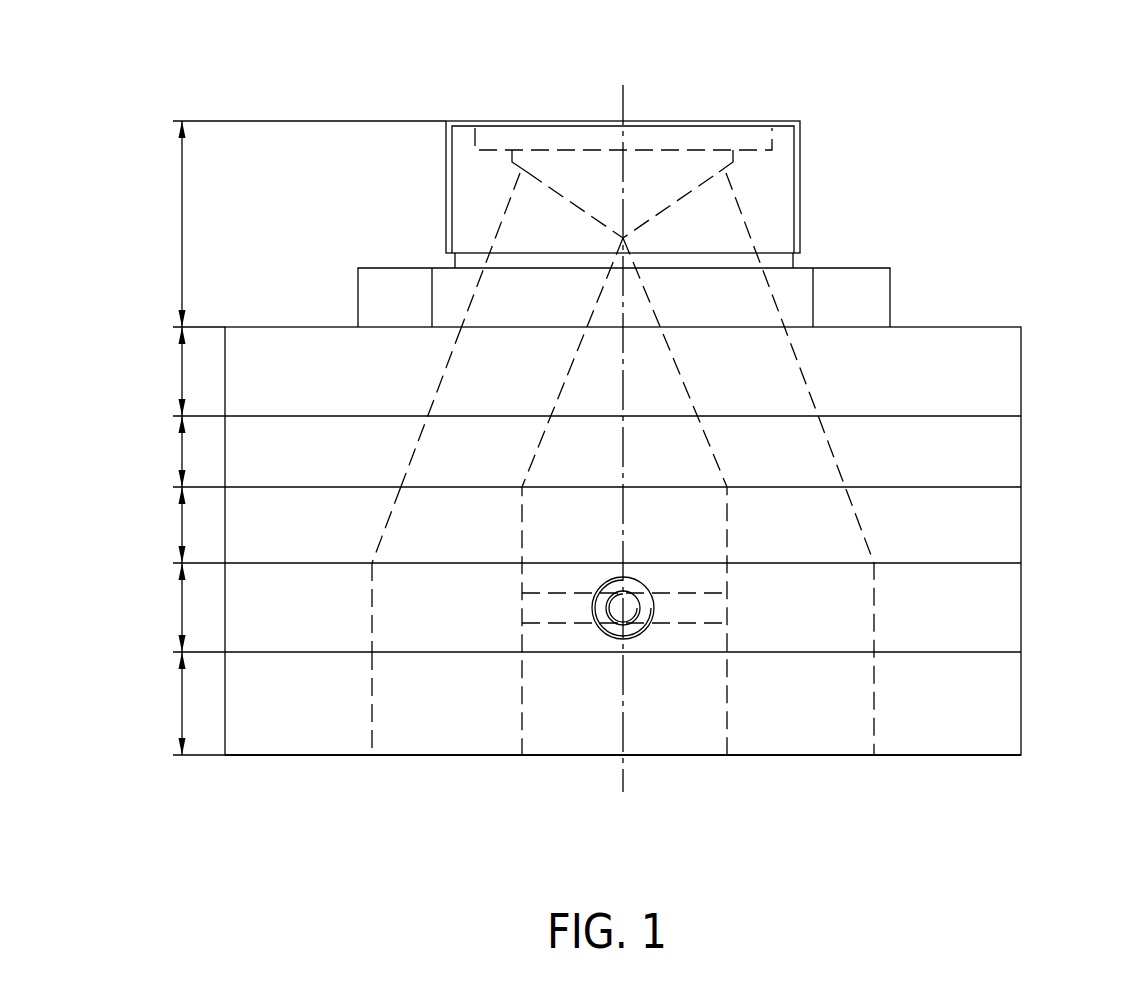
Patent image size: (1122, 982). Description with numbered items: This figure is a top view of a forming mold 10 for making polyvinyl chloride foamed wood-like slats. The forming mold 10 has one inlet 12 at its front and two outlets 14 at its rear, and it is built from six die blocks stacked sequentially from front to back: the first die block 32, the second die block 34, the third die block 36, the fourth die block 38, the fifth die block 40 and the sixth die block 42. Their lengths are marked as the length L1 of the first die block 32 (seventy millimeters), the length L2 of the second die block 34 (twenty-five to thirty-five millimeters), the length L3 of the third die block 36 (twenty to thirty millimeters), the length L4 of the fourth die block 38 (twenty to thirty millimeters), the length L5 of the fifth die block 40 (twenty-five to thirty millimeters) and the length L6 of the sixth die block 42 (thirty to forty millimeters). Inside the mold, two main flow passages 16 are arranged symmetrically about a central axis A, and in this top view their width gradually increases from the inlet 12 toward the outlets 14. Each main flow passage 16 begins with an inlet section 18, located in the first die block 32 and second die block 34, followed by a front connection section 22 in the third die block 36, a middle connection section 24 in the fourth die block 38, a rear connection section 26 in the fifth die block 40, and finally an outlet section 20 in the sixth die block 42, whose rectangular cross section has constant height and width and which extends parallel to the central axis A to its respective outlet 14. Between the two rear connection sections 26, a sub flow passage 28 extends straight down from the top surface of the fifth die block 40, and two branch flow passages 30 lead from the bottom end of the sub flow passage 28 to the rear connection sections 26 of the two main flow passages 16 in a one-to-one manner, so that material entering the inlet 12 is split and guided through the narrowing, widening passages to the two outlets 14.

The forming mold 10 is at (1022, 132).
The inlet 12 is at (703, 182).
The outlets 14 is at (450, 757).
The main flow passages 16 is at (808, 362).
The inlet section 18 is at (500, 223).
The outlet section 20 is at (372, 717).
The front connection section 22 is at (428, 387).
The middle connection section 24 is at (383, 519).
The rear connection section 26 is at (372, 620).
The sub flow passage 28 is at (630, 615).
The branch flow passages 30 is at (558, 623).
The first die block 32 is at (776, 214).
The second die block 34 is at (982, 352).
The third die block 36 is at (1008, 445).
The fourth die block 38 is at (1007, 548).
The fifth die block 40 is at (1007, 637).
The sixth die block 42 is at (1007, 740).
The central axis A is at (623, 93).
The length of the first die block L1 is at (165, 224).
The length of the second die block L2 is at (165, 371).
The length of the third die block L3 is at (165, 451).
The length of the fourth die block L4 is at (165, 525).
The length of the fifth die block L5 is at (165, 607).
The length of the sixth die block L6 is at (165, 703).